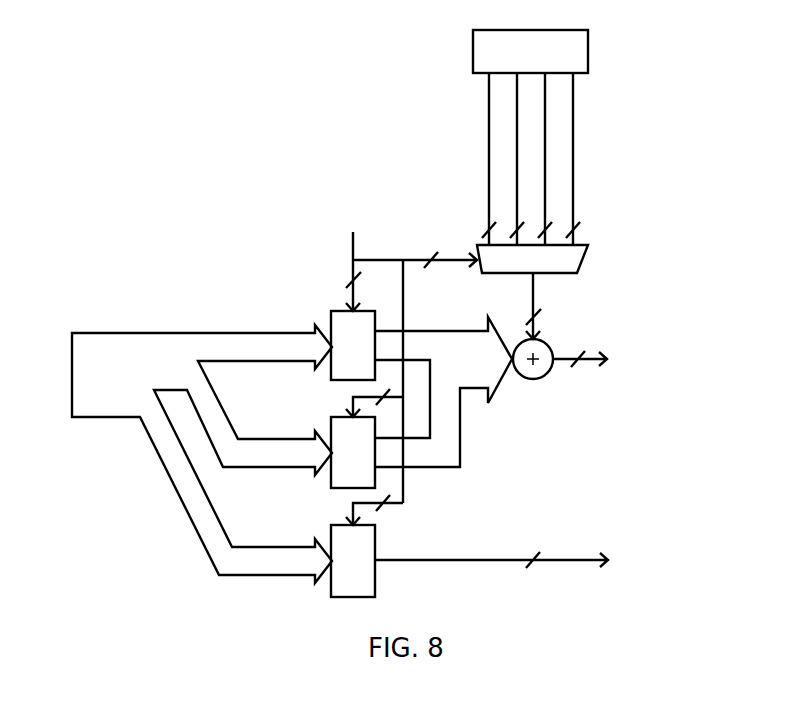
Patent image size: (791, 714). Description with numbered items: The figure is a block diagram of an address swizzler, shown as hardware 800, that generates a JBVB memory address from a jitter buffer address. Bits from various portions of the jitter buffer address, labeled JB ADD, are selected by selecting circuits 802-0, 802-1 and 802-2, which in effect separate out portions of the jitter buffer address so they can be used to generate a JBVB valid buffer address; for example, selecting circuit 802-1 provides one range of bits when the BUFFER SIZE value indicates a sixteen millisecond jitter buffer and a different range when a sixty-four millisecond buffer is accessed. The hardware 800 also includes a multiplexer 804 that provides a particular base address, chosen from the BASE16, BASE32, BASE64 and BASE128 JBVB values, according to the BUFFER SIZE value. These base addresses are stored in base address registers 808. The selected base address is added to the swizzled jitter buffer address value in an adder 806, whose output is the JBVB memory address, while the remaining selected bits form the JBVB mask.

The address swizzler hardware 800 is at (392, 313).
The selecting circuit 802-0 is at (353, 345).
The selecting circuit 802-1 is at (353, 452).
The selecting circuit 802-2 is at (353, 561).
The multiplexer 804 is at (532, 259).
The adder 806 is at (533, 380).
The base address registers 808 is at (530, 51).